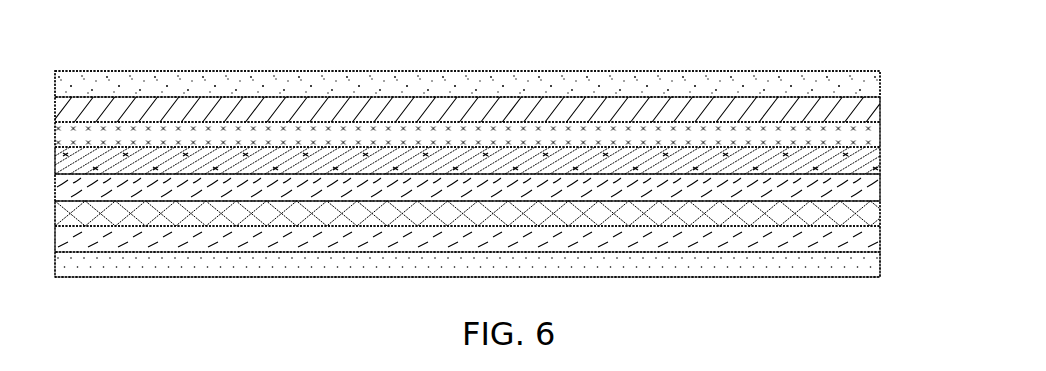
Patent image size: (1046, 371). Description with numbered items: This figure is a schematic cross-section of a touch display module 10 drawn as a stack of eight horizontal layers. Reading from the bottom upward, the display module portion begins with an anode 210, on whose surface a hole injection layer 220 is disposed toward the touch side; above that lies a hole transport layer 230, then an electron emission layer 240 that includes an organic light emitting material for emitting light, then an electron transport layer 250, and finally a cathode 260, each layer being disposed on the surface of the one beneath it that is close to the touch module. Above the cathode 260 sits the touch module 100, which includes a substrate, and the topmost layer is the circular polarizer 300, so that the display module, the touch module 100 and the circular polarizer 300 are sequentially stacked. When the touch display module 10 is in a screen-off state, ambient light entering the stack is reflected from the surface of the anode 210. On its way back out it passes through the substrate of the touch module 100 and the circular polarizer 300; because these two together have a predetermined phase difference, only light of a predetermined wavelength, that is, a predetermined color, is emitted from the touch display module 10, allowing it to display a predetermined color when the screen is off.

The touch display module 10 is at (461, 152).
The circular polarizer 300 is at (847, 89).
The touch module 100 is at (847, 113).
The cathode 260 is at (853, 138).
The electron transport layer 250 is at (856, 160).
The electron emission layer 240 is at (850, 190).
The hole transport layer 230 is at (850, 212).
The hole injection layer 220 is at (845, 238).
The anode 210 is at (852, 262).